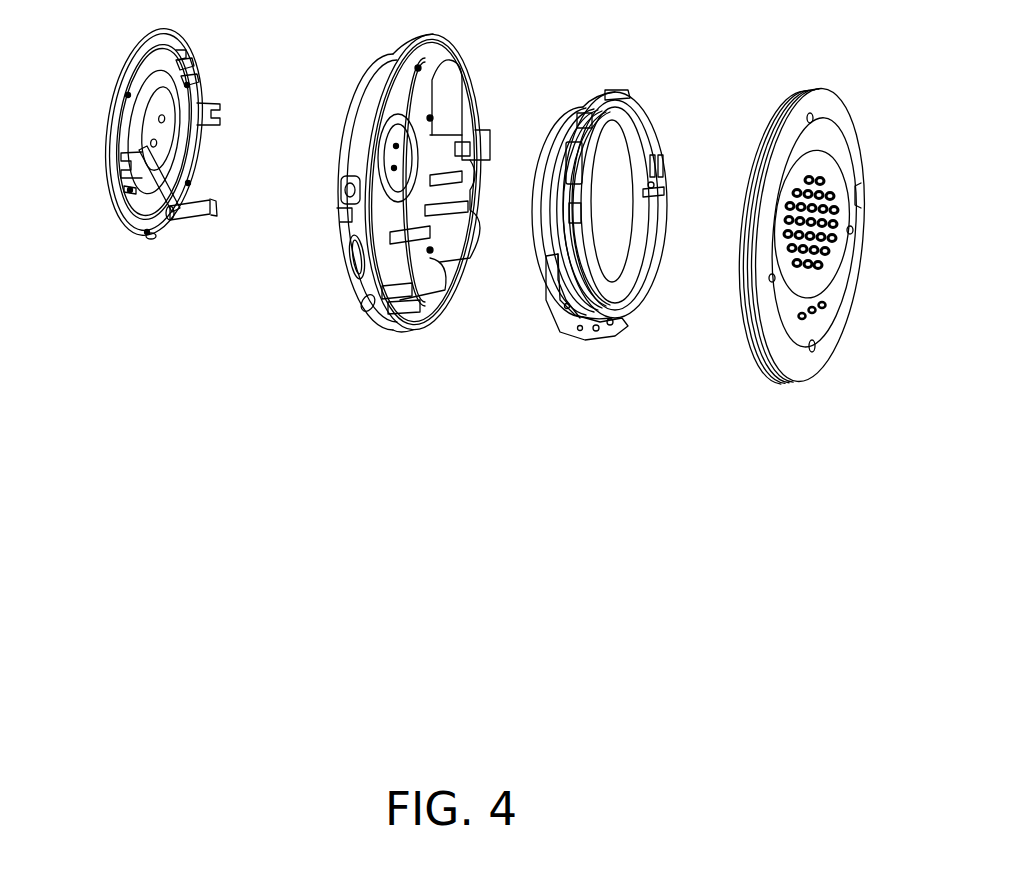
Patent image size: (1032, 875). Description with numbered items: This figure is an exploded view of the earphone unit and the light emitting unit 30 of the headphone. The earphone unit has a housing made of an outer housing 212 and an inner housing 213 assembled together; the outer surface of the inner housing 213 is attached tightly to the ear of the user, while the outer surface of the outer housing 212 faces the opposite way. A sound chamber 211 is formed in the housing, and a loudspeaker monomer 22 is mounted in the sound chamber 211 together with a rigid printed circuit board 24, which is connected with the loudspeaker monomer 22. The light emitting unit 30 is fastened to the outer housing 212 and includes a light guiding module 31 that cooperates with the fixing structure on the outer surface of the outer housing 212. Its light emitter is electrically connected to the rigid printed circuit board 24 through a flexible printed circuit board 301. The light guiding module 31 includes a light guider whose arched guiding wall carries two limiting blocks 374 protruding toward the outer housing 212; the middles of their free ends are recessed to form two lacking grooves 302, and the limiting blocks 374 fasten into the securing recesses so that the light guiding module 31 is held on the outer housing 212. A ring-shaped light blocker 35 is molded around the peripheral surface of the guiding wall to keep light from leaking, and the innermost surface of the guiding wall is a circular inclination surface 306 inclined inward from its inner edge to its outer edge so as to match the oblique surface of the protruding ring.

The light emitting unit 30 is at (207, 156).
The light guiding module 31 is at (96, 125).
The light blocker 35 is at (185, 44).
The limiting blocks 374 is at (199, 111).
The lacking grooves 302 is at (219, 118).
The flexible printed circuit board 301 is at (220, 218).
The inclination surface 306 is at (150, 237).
The outer housing 212 is at (361, 68).
The sound chamber 211 is at (456, 195).
The loudspeaker monomer 22 is at (648, 128).
The rigid printed circuit board 24 is at (616, 336).
The inner housing 213 is at (844, 111).